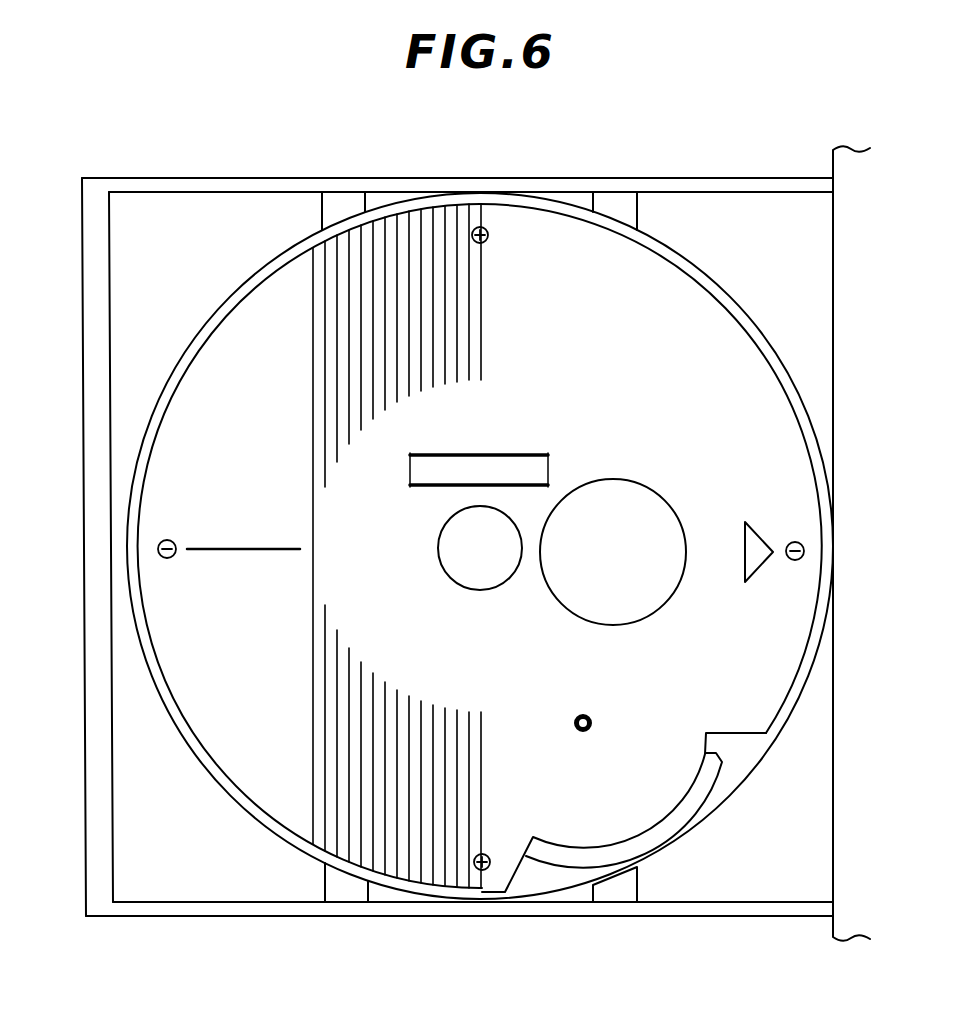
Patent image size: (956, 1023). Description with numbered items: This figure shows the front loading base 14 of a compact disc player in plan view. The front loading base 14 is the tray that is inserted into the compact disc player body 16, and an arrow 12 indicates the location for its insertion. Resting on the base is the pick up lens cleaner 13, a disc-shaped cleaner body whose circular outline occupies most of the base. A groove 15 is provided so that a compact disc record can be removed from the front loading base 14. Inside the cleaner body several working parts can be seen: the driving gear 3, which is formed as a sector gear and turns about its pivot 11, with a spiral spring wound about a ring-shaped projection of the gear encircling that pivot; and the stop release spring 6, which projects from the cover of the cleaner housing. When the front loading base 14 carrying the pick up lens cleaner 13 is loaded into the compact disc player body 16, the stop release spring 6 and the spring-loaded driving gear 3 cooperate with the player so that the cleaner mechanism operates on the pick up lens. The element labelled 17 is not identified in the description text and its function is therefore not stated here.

The driving gear 3 is at (568, 866).
The stop release spring 6 is at (518, 468).
The pivot 11 is at (450, 578).
The arrow 12 is at (760, 535).
The pick up lens cleaner 13 is at (250, 752).
The front loading base 14 is at (262, 887).
The groove 15 is at (357, 890).
The compact disc player body 16 is at (850, 773).
The left frame member 17 is at (85, 608).